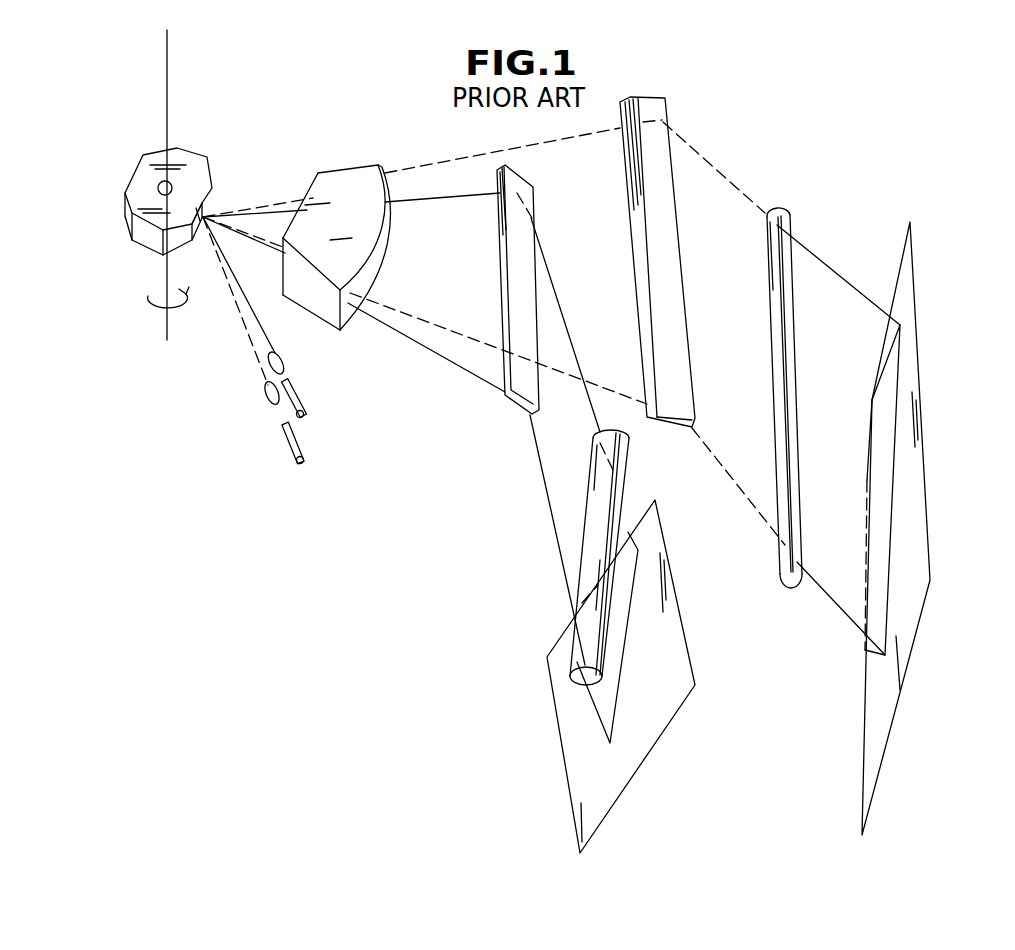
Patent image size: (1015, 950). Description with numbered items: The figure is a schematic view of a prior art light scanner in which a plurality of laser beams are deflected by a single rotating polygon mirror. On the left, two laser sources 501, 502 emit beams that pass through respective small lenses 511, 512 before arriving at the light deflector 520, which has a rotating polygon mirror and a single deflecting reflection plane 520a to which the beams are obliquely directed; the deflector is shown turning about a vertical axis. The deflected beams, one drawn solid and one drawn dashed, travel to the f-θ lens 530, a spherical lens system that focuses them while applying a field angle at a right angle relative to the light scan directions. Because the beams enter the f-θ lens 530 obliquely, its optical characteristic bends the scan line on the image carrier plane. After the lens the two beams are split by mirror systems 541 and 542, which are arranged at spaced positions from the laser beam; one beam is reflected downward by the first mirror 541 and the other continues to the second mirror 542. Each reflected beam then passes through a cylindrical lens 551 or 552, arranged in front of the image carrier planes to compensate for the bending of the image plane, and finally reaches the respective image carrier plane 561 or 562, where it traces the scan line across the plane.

The light deflector 520 is at (186, 165).
The deflecting reflection plane 520a is at (203, 212).
The f-θ lens 530 is at (347, 187).
The collimating lens for first laser 511 is at (283, 357).
The collimating lens for second laser 512 is at (267, 396).
The first semiconductor laser 501 is at (305, 414).
The second semiconductor laser 502 is at (305, 461).
The mirror system 541 is at (533, 187).
The mirror system 542 is at (662, 119).
The cylindrical lens 551 is at (625, 475).
The cylindrical lens 552 is at (783, 212).
The image carrier plane 561 is at (668, 641).
The image carrier plane 562 is at (910, 295).